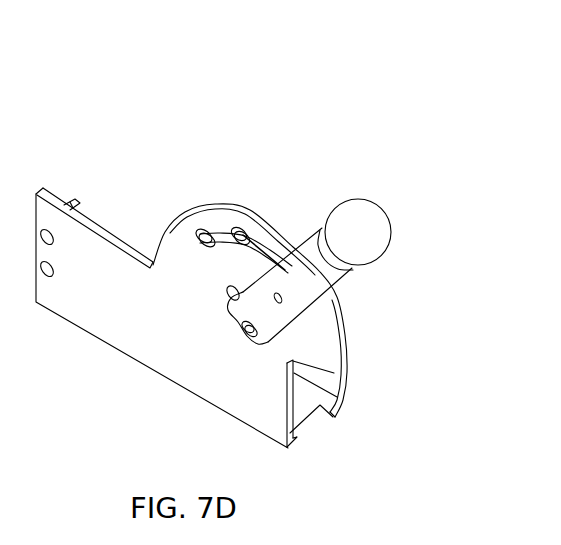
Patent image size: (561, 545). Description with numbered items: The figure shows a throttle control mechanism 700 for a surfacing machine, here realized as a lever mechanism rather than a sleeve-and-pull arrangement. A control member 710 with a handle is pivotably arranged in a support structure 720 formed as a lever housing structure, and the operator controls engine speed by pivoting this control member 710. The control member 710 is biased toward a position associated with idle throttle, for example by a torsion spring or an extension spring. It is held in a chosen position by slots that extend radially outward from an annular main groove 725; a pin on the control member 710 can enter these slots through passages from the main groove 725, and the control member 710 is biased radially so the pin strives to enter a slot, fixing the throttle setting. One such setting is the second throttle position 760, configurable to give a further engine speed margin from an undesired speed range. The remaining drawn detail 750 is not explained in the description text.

The throttle control mechanism 700 is at (75, 98).
The control member 710 is at (337, 205).
The support structure 720 is at (181, 336).
The annular main groove 725 is at (263, 254).
The clip 750 is at (240, 226).
The second throttle position 760 is at (200, 230).